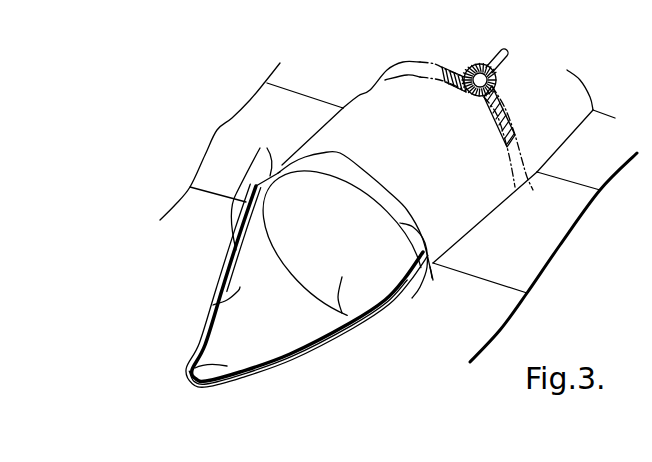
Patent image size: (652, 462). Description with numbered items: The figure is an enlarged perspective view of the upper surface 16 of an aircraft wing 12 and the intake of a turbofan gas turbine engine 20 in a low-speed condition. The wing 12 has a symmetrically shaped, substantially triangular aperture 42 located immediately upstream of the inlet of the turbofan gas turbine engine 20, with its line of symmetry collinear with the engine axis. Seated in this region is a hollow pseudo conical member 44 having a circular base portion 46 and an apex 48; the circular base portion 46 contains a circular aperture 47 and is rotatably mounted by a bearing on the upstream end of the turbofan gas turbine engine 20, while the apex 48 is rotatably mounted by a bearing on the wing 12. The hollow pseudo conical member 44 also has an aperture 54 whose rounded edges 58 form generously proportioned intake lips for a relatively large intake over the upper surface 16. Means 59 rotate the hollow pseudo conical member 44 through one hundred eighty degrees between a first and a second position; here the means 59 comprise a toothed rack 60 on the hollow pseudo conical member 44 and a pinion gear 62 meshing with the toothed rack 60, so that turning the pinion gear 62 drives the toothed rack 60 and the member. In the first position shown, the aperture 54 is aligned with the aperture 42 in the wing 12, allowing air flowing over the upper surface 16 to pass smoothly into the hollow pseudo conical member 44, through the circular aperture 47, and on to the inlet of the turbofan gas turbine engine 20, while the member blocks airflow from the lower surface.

The wing 12 is at (190, 173).
The upper surface 16 is at (493, 298).
The turbofan gas turbine engine 20 is at (480, 196).
The aperture 42 is at (217, 270).
The hollow pseudo conical member 44 is at (420, 287).
The circular base portion 46 is at (418, 272).
The circular aperture 47 is at (345, 320).
The apex 48 is at (242, 372).
The aperture 54 is at (213, 304).
The rounded edges 58 is at (253, 188).
The means to rotate 59 is at (463, 58).
The toothed rack 60 is at (500, 109).
The pinion gear 62 is at (508, 73).